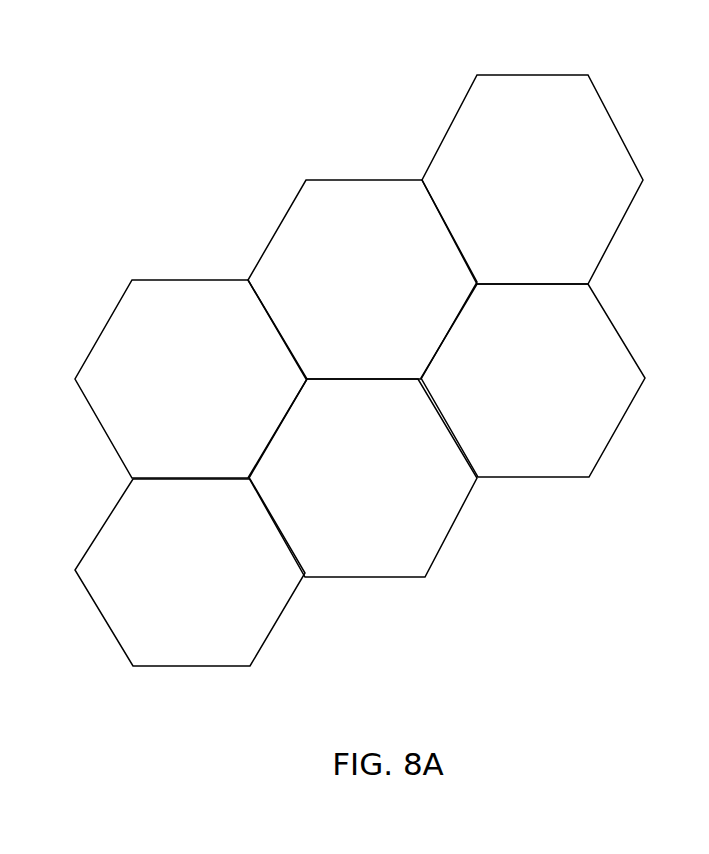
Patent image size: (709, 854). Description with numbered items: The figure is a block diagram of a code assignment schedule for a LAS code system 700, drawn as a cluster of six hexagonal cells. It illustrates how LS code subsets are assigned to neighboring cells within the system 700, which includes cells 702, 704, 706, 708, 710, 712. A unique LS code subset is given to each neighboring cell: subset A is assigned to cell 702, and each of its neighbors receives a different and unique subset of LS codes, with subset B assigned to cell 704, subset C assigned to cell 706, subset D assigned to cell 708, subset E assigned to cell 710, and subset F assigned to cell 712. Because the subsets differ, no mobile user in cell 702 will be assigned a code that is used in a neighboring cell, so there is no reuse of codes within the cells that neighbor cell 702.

The system 700 is at (129, 64).
The cell 702 is at (191, 379).
The cell 704 is at (362, 279).
The cell 706 is at (532, 179).
The cell 708 is at (190, 572).
The cell 710 is at (363, 478).
The cell 712 is at (533, 380).